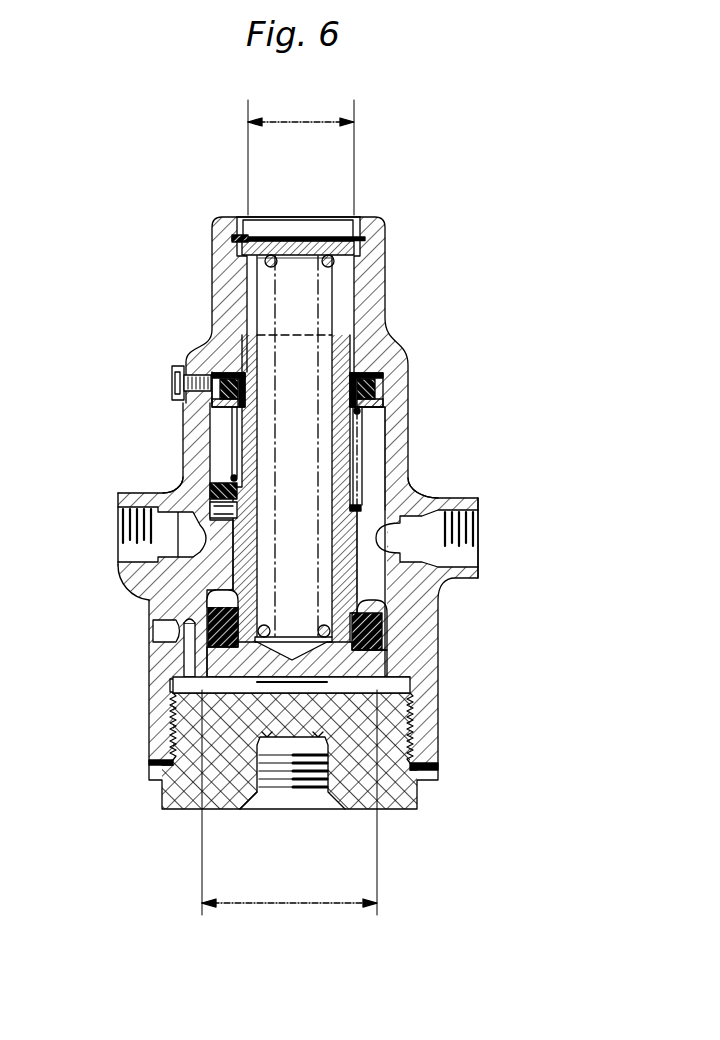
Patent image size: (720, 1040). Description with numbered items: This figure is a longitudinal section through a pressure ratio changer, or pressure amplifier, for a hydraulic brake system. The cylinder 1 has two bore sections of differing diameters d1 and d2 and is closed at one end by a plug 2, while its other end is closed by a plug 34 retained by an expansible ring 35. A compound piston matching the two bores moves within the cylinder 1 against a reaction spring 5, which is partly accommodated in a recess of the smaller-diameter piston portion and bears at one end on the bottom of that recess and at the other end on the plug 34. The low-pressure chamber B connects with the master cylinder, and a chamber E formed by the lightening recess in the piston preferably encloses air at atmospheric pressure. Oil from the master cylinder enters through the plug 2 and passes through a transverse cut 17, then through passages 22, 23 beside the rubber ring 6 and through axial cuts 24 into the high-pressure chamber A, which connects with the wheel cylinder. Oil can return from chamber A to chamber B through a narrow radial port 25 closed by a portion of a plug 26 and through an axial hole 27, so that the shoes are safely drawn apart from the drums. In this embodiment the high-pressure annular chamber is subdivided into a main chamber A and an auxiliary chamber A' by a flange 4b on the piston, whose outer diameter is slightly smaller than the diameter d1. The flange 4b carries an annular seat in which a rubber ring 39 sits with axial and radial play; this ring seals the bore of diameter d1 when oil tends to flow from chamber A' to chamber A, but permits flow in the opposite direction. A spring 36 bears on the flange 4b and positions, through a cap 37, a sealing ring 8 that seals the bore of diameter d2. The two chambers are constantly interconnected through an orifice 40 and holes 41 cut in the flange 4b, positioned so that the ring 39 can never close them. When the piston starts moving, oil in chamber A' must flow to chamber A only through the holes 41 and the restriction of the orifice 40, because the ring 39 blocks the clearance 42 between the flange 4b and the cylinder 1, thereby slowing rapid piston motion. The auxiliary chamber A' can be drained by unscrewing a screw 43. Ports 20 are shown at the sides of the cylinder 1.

The cylinder 1 is at (374, 265).
The plug 2 is at (400, 732).
The reaction spring 5 is at (268, 305).
The rubber ring 6 is at (380, 628).
The rubber packing ring 8 is at (372, 376).
The transverse cut 17 is at (280, 680).
The port 20 is at (118, 546).
The passage 22 is at (383, 656).
The passage 23 is at (336, 628).
The axial cuts 24 is at (376, 605).
The narrow radial port 25 is at (178, 688).
The plug 26 is at (166, 630).
The axial hole 27 is at (200, 640).
The plug 34 is at (234, 251).
The expansible ring 35 is at (235, 240).
The spring 36 is at (356, 462).
The cap 37 is at (386, 378).
The rubber ring 39 is at (206, 516).
The orifice 40 is at (150, 596).
The holes 41 is at (212, 496).
The clearance 42 is at (400, 481).
The screw 43 is at (175, 390).
The flange 4b is at (192, 492).
The main high-pressure chamber A is at (434, 555).
The auxiliary chamber A' is at (413, 450).
The low-pressure chamber B is at (400, 687).
The chamber E is at (290, 281).
The large bore diameter d1 is at (289, 802).
The small bore diameter d2 is at (301, 157).